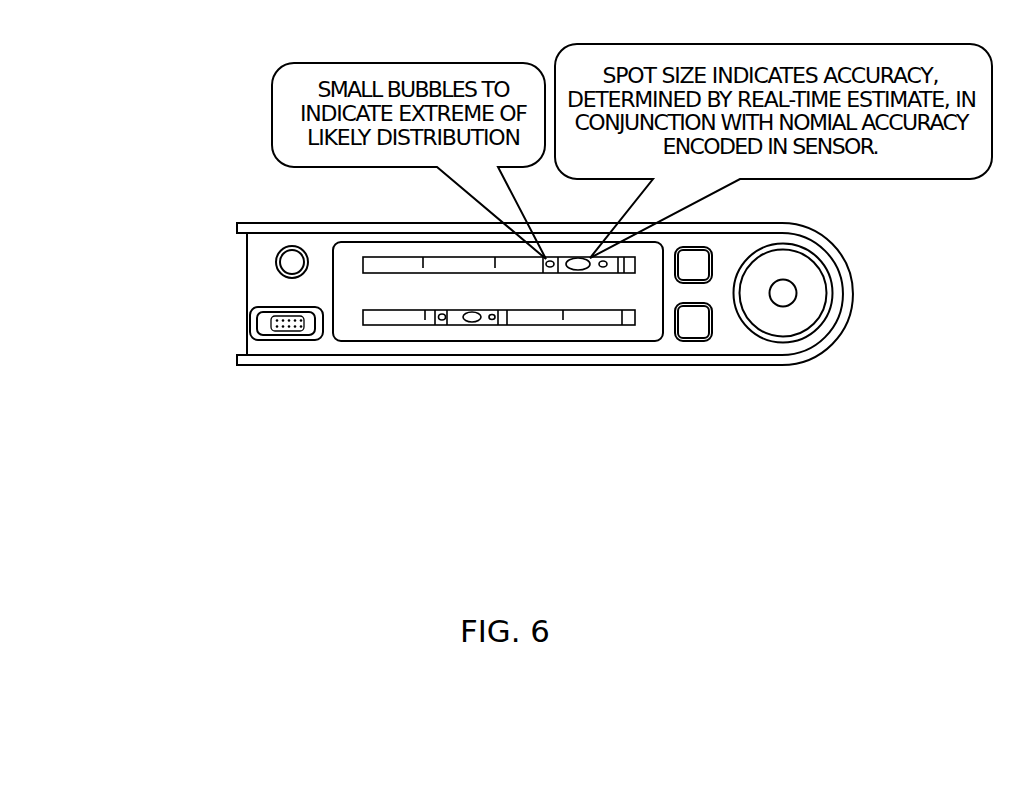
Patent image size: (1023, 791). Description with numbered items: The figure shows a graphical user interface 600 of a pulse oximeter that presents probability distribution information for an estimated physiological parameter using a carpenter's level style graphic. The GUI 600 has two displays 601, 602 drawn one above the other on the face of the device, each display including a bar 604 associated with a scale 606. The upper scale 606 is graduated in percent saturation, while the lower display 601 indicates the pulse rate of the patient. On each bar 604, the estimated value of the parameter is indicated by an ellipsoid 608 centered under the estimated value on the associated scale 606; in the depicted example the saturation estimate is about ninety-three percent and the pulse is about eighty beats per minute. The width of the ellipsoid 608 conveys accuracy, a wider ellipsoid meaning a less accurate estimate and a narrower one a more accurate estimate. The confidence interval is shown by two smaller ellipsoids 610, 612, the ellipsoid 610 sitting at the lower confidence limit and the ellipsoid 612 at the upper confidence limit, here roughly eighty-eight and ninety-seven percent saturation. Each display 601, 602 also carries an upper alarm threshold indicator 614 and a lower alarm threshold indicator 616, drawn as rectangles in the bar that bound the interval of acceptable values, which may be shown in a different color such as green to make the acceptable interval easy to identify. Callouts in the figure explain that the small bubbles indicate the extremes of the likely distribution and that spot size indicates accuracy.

The graphical user interface 600 is at (243, 136).
The lower display 601 is at (403, 322).
The upper display 602 is at (365, 270).
The bar 604 is at (403, 272).
The scale 606 is at (340, 315).
The ellipsoid 608 is at (474, 326).
The lower confidence limit ellipsoid 610 is at (443, 326).
The upper confidence limit ellipsoid 612 is at (500, 326).
The upper alarm threshold indicator 614 is at (510, 326).
The lower alarm threshold indicator 616 is at (436, 326).